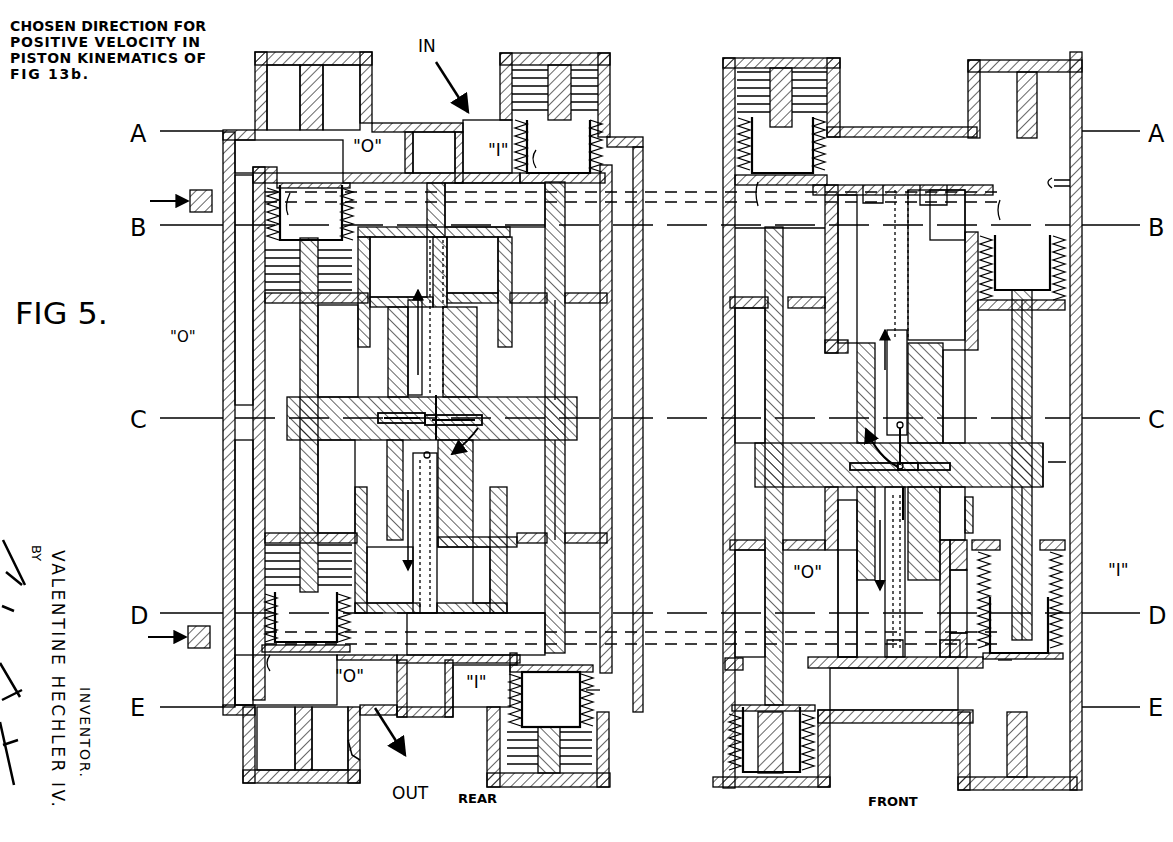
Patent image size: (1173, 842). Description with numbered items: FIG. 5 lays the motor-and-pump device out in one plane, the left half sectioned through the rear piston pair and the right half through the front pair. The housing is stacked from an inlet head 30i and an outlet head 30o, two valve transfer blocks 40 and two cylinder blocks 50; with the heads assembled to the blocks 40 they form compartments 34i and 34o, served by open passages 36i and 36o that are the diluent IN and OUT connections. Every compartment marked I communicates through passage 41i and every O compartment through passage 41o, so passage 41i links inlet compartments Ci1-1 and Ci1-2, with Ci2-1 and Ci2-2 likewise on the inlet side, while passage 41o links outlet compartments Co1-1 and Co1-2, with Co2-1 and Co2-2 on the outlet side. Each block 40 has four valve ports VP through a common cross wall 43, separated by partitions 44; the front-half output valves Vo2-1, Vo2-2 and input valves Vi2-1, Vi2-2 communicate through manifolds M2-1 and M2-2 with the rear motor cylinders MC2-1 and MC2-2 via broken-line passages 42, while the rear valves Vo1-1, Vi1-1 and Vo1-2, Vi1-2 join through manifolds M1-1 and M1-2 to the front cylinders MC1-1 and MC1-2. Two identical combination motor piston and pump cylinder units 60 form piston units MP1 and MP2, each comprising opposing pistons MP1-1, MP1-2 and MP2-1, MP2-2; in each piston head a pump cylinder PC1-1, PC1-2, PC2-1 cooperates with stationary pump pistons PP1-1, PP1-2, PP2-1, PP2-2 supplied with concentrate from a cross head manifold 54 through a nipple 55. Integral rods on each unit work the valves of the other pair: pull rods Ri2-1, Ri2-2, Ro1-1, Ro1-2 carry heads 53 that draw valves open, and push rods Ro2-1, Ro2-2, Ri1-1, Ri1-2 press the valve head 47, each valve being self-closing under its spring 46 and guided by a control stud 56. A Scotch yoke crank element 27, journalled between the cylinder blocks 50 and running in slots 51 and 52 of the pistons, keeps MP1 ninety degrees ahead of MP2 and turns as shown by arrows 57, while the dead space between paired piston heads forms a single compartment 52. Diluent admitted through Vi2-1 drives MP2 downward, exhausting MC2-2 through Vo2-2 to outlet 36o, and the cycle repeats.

The inlet head 30i is at (254, 84).
The outlet head 30o is at (243, 734).
The inlet compartment 34i is at (472, 114).
The outlet compartment 34o is at (360, 748).
The inlet passage 36i is at (498, 108).
The outlet passage 36o is at (350, 748).
The valve transfer block 40 is at (224, 170).
The outlet interconnecting passage 41o is at (253, 374).
The inlet interconnecting passage 41i is at (612, 289).
The manifold passage 42 is at (397, 420).
The cross wall 43 is at (906, 184).
The partition 44 is at (968, 184).
The spring 46 is at (265, 243).
The valve head 47 is at (1040, 680).
The cylinder block 50 is at (230, 287).
The slot 51 is at (385, 426).
The crank space compartment 52 is at (1060, 392).
The pull rod head 53 is at (280, 259).
The cross head manifold 54 is at (672, 192).
The nipple 55 is at (196, 194).
The control stud 56 is at (738, 86).
The rotation arrows 57 is at (858, 434).
The combination motor piston and pump cylinder unit 60 is at (600, 392).
The Scotch yoke crank element 27 is at (460, 446).
The valve port VP is at (1076, 182).
The second motor piston unit MP2 is at (386, 383).
The first motor piston unit MP1 is at (858, 384).
The pump piston PP2-1 is at (425, 352).
The pump piston PP2-2 is at (430, 572).
The pump piston PP1-1 is at (897, 292).
The pump piston PP1-2 is at (912, 638).
The pump cylinder PC2-1 is at (446, 385).
The pump cylinder PC1-1 is at (912, 406).
The pump cylinder PC1-2 is at (1050, 596).
The manifold M2-1 is at (428, 150).
The manifold M1-1 is at (966, 218).
The manifold M1-2 is at (864, 690).
The manifold M2-2 is at (440, 700).
The motor cylinder MC2-1 is at (480, 278).
The motor cylinder MC2-2 is at (468, 575).
The motor cylinder MC1-1 is at (948, 306).
The motor cylinder MC1-2 is at (802, 524).
The motor piston MP2-1 is at (460, 360).
The motor piston MP2-2 is at (340, 486).
The motor piston MP1-1 is at (956, 358).
The motor piston MP1-2 is at (848, 618).
The output compartment Co1-1 is at (289, 156).
The output compartment Co1-2 is at (286, 680).
The output compartment Co2-1 is at (862, 269).
The output compartment Co2-2 is at (790, 590).
The inlet compartment Ci1-1 is at (487, 146).
The inlet compartment Ci1-2 is at (484, 700).
The inlet compartment Ci2-1 is at (941, 227).
The inlet compartment Ci2-2 is at (1034, 540).
The motor output valve Vo1-1 is at (345, 180).
The motor output valve Vo1-2 is at (291, 666).
The motor output valve Vo2-1 is at (774, 200).
The motor output valve Vo2-2 is at (730, 666).
The motor input valve Vi1-1 is at (582, 165).
The motor input valve Vi1-2 is at (610, 688).
The motor input valve Vi2-1 is at (978, 200).
The motor input valve Vi2-2 is at (1000, 673).
The pull rod Ro1-1 is at (260, 314).
The pull rod Ro1-2 is at (304, 476).
The push rod Ro2-1 is at (770, 352).
The push rod Ro2-2 is at (775, 567).
The push rod Ri1-1 is at (566, 322).
The push rod Ri1-2 is at (563, 495).
The pull rod Ri2-1 is at (1034, 358).
The pull rod Ri2-2 is at (1034, 555).